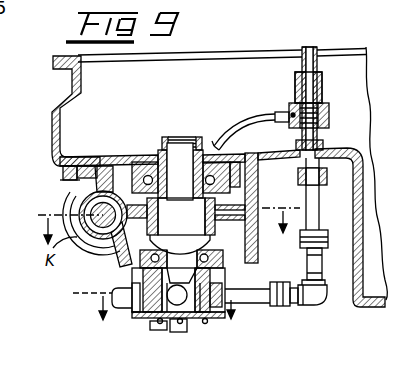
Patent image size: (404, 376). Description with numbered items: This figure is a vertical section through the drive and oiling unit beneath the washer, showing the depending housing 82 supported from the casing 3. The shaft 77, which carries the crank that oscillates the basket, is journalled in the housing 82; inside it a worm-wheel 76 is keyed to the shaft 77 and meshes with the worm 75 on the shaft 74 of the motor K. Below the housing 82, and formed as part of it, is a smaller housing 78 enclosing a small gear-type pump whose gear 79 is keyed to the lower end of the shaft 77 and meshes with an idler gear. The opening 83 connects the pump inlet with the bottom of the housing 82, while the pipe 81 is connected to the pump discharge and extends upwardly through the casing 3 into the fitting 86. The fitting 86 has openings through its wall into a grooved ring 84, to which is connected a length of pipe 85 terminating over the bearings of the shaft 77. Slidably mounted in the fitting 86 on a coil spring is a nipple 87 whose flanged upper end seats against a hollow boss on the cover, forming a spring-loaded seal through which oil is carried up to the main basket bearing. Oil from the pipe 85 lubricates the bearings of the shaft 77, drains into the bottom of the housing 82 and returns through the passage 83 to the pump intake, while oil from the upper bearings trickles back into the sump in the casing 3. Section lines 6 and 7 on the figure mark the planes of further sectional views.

The casing 3 is at (52, 141).
The section line 6- 6 is at (169, 216).
The section line 7- 7 is at (160, 302).
The motor shaft 74 is at (103, 157).
The worm 75 is at (150, 155).
The worm-wheel 76 is at (226, 222).
The shaft 77 is at (181, 213).
The smaller housing 78 is at (150, 325).
The pump gear 79 is at (183, 333).
The pipe 81 is at (313, 305).
The depending housing 82 is at (258, 247).
The opening 83 is at (122, 284).
The grooved ring 84 is at (289, 109).
The pipe 85 is at (237, 133).
The fitting 86 is at (322, 84).
The nipple 87 is at (317, 49).